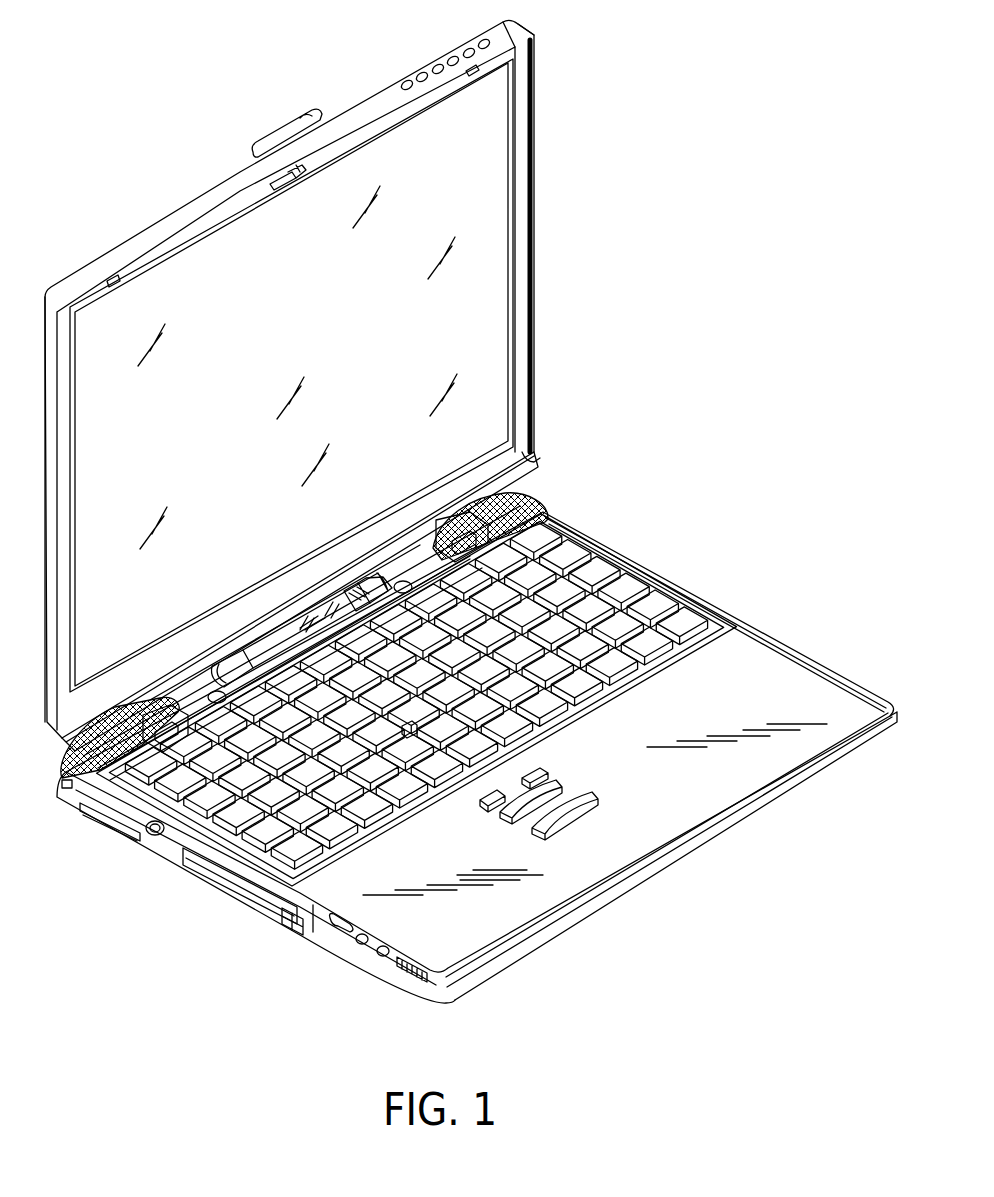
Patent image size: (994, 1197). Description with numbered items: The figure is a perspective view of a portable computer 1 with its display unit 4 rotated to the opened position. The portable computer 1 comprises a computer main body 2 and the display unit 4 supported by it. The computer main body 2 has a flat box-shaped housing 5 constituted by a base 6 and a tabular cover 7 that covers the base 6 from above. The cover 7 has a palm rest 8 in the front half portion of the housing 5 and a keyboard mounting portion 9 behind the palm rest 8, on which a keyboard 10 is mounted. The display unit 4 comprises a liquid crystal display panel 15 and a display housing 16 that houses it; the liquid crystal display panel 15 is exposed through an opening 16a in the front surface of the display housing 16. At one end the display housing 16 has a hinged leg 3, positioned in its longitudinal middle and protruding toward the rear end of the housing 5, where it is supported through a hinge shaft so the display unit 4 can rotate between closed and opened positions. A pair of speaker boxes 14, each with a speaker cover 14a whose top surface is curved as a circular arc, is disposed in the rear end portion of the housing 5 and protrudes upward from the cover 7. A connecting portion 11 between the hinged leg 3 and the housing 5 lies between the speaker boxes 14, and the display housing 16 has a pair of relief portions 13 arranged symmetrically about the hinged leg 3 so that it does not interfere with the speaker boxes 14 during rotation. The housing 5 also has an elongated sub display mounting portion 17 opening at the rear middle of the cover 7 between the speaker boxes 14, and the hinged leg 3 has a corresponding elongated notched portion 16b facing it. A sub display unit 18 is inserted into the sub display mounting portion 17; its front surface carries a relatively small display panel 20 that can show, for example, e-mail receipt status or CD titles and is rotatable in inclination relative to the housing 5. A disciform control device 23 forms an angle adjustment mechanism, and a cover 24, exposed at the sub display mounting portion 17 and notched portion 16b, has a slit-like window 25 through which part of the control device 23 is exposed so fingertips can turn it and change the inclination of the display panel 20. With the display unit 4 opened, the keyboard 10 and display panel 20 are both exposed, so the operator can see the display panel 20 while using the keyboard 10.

The portable computer 1 is at (676, 479).
The computer main body 2 is at (770, 618).
The hinged leg 3 is at (414, 556).
The display unit 4 is at (548, 232).
The housing 5 is at (176, 868).
The base 6 is at (362, 972).
The cover 7 is at (297, 934).
The palm rest 8 is at (688, 814).
The keyboard mounting portion 9 is at (674, 576).
The keyboard 10 is at (597, 575).
The connecting portion 11 is at (190, 684).
The relief portions 13 is at (524, 462).
The speaker boxes 14 is at (548, 517).
The speaker cover 14a is at (500, 505).
The liquid crystal display panel 15 is at (500, 302).
The display housing 16 is at (534, 98).
The opening 16a is at (507, 166).
The notched portion 16b is at (301, 624).
The sub display mounting portion 17 is at (336, 599).
The sub display unit 18 is at (226, 634).
The display panel 20 is at (263, 604).
The control device 23 is at (374, 567).
The cover 24 is at (230, 657).
The window 25 is at (360, 590).